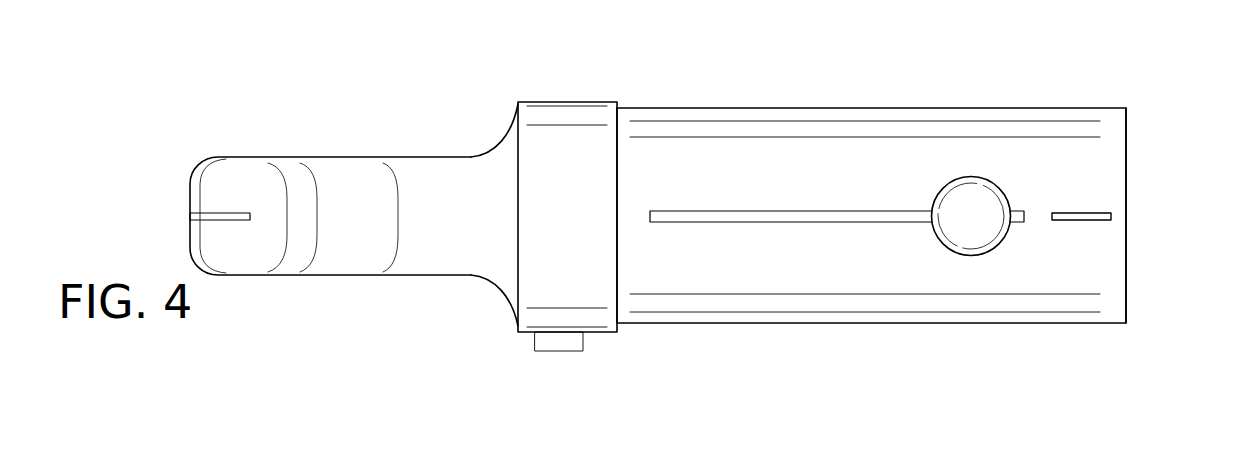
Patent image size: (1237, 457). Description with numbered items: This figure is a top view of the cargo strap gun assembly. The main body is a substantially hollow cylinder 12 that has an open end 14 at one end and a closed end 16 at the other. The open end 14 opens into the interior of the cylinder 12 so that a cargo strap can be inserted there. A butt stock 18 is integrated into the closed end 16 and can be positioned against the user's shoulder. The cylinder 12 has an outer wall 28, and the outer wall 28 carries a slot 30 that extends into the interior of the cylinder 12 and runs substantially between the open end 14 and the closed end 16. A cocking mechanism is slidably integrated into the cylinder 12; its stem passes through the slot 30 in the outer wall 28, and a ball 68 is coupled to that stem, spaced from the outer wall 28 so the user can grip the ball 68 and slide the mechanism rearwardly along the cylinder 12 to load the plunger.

The cylinder 12 is at (988, 108).
The open end 14 is at (1126, 217).
The closed end 16 is at (518, 215).
The butt stock 18 is at (332, 144).
The outer wall 28 is at (877, 137).
The slot 30 is at (790, 216).
The ball 68 is at (980, 236).